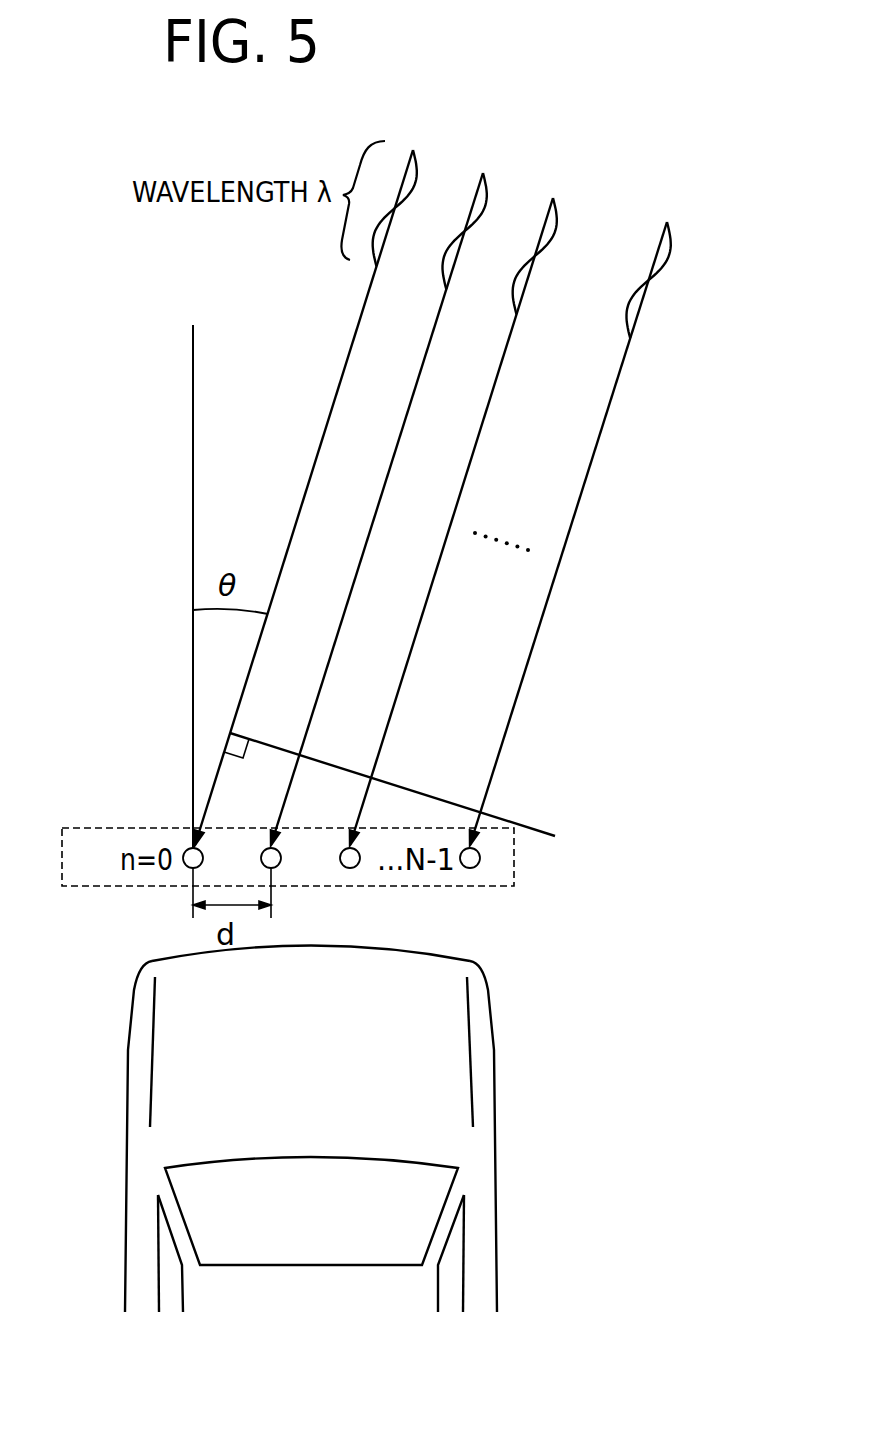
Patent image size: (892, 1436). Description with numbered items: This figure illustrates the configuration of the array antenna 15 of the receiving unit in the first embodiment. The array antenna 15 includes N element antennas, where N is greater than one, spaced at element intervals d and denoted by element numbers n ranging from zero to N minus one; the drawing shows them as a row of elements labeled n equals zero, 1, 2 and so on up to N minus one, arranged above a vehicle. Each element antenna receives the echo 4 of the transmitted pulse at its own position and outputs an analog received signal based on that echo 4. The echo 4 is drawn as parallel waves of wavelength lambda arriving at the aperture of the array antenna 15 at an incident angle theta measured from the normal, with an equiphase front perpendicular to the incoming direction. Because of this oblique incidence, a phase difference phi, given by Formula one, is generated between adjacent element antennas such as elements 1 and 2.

The echo 4 is at (511, 717).
The array antenna 15 is at (517, 824).
The antenna element 1 is at (261, 859).
The antenna element 2 is at (339, 859).